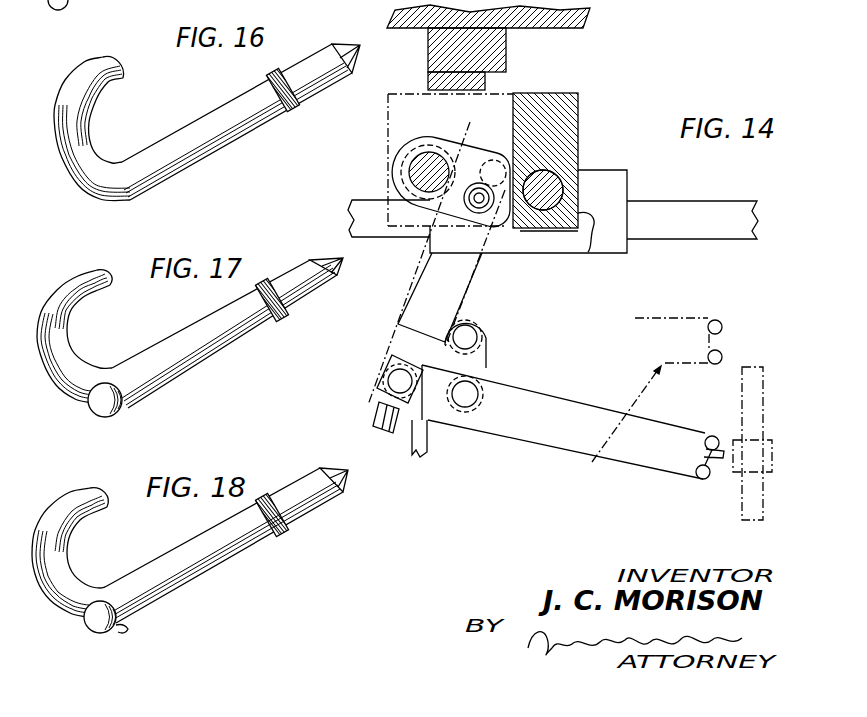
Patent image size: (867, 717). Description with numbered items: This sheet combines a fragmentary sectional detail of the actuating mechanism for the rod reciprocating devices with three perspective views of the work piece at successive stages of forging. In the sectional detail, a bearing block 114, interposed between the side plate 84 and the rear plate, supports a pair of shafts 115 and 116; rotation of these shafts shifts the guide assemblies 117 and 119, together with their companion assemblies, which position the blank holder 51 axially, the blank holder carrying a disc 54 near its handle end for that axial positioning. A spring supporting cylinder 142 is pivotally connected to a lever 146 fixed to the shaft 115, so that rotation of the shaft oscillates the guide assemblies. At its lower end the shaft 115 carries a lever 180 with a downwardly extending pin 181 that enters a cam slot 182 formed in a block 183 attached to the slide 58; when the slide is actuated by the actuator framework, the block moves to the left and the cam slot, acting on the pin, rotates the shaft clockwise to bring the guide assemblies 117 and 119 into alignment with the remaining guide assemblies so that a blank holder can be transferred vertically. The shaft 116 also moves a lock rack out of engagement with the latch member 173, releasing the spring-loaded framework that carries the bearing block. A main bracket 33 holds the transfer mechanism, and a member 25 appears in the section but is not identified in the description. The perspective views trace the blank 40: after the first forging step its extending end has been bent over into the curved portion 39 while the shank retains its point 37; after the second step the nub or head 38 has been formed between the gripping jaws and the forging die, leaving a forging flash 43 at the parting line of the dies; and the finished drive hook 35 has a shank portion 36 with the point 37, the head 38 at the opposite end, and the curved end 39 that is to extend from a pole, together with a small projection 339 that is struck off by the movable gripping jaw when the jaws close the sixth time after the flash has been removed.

In FIG. 14, the plate 25 is at (589, 27).
In FIG. 14, the main bracket 33 is at (506, 49).
In FIG. 14, the latch member 173 is at (428, 81).
In FIG. 14, the bearing block 114 is at (572, 106).
In FIG. 14, the shaft 116 is at (548, 180).
In FIG. 14, the shaft 115 is at (420, 169).
In FIG. 14, the lever 180 is at (445, 152).
In FIG. 14, the lever 146 is at (490, 162).
In FIG. 14, the pin 181 is at (480, 208).
In FIG. 14, the cam slot 182 is at (583, 240).
In FIG. 14, the block 183 is at (547, 250).
In FIG. 14, the spring supporting cylinder 142 is at (470, 290).
In FIG. 14, the slide 58 is at (699, 232).
In FIG. 14, the side plate 84 is at (444, 443).
In FIG. 14, the guide assembly 117 is at (557, 446).
In FIG. 14, the guide assembly 119 is at (538, 418).
In FIG. 14, the blank holder 51 is at (742, 398).
In FIG. 14, the disc 54 is at (720, 466).
In FIG. 16, the blank 40 is at (183, 122).
In FIG. 17, the blank 40 is at (258, 336).
In FIG. 16, the point 37 is at (350, 43).
In FIG. 17, the point 37 is at (341, 276).
In FIG. 18, the point 37 is at (350, 489).
In FIG. 17, the nub or head 38 is at (97, 406).
In FIG. 18, the nub or head 38 is at (95, 627).
In FIG. 17, the forging flash 43 is at (128, 407).
In FIG. 18, the curved end 39 is at (95, 518).
In FIG. 18, the shank portion 36 is at (170, 566).
In FIG. 18, the drive hook 35 is at (228, 571).
In FIG. 18, the projection 339 is at (128, 634).